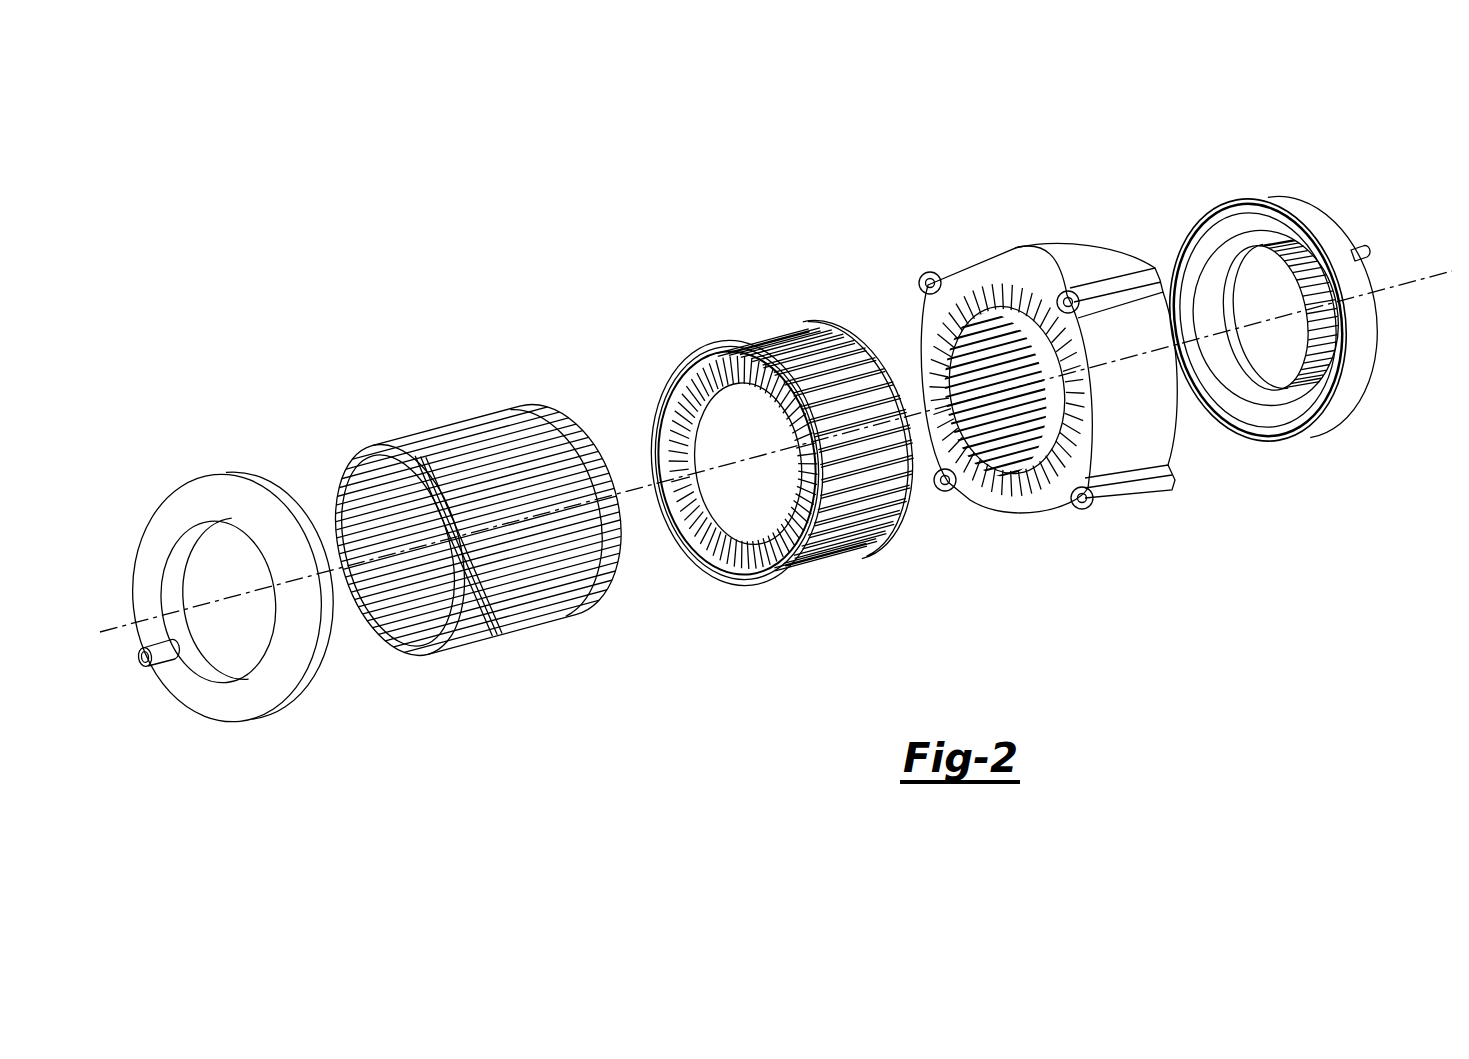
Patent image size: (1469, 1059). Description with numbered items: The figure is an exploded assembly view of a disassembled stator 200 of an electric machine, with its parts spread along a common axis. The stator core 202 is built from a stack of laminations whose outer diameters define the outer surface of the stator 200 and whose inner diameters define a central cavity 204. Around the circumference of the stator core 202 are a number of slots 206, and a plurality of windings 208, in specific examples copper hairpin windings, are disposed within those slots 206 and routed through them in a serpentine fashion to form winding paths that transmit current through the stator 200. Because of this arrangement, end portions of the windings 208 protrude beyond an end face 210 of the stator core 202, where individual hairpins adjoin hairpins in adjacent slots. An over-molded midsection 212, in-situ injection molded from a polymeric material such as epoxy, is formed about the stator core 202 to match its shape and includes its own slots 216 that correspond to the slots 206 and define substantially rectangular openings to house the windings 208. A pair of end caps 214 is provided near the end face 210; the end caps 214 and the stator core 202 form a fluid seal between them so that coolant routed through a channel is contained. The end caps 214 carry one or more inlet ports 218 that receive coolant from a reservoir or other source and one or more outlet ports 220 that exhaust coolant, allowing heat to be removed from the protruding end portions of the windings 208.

The stator 200 is at (402, 268).
The stator core 202 is at (1171, 521).
The cavity 204 is at (1010, 452).
The slots 206 is at (935, 312).
The windings 208 is at (531, 665).
The end face 210 is at (985, 278).
The over-molded midsection 212 is at (849, 583).
The end caps 214 is at (1203, 174).
The slots 216 is at (690, 372).
The inlet ports 218 is at (163, 660).
The outlet ports 220 is at (1369, 252).